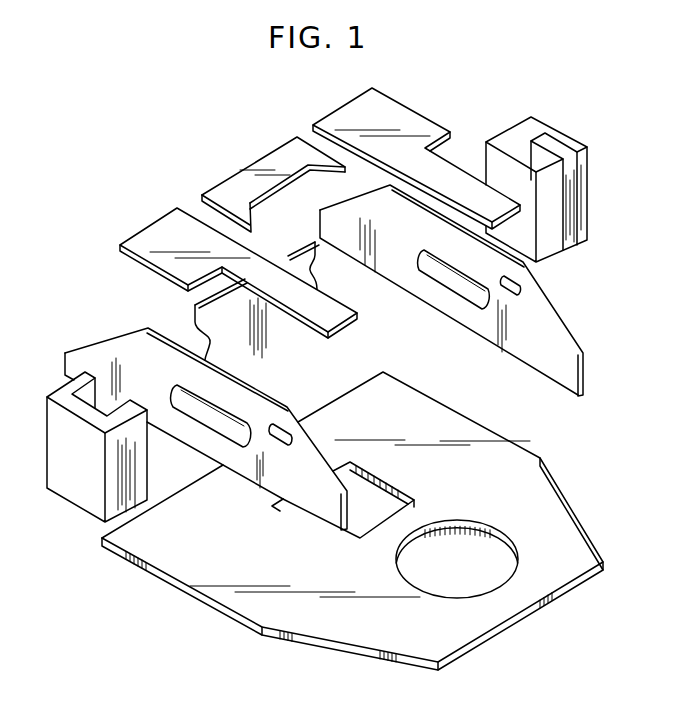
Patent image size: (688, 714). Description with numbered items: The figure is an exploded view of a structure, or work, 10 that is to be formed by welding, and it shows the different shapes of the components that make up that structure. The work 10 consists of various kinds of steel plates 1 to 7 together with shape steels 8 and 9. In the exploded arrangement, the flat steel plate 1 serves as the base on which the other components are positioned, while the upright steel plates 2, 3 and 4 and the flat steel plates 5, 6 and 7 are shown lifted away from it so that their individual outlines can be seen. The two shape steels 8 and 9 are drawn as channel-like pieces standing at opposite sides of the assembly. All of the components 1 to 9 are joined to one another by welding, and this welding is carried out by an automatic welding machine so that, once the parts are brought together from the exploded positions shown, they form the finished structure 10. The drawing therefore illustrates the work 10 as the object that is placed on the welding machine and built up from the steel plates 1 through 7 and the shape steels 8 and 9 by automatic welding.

The steel plate 1 is at (558, 512).
The steel plate 2 is at (208, 313).
The steel plate 3 is at (118, 357).
The steel plate 4 is at (555, 330).
The steel plate 5 is at (263, 165).
The steel plate 6 is at (158, 230).
The steel plate 7 is at (387, 113).
The shape steel 8 is at (558, 135).
The shape steel 9 is at (82, 490).
The structure 10 is at (354, 660).